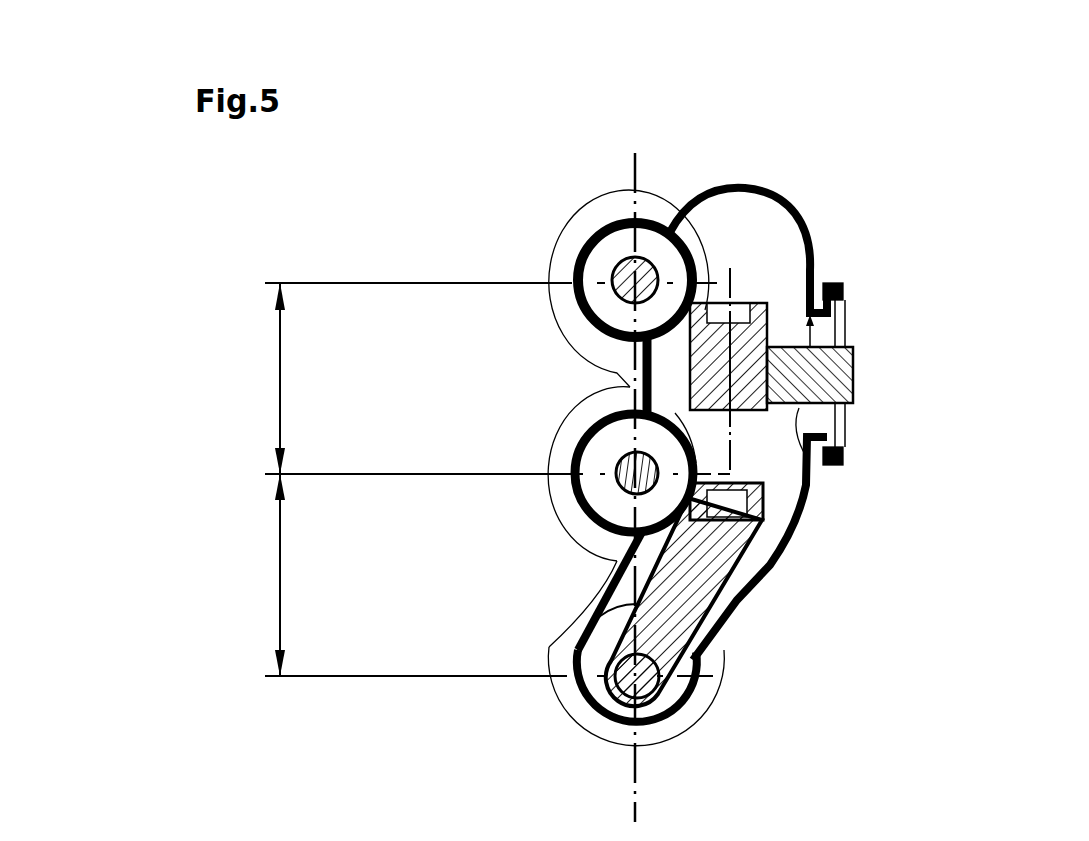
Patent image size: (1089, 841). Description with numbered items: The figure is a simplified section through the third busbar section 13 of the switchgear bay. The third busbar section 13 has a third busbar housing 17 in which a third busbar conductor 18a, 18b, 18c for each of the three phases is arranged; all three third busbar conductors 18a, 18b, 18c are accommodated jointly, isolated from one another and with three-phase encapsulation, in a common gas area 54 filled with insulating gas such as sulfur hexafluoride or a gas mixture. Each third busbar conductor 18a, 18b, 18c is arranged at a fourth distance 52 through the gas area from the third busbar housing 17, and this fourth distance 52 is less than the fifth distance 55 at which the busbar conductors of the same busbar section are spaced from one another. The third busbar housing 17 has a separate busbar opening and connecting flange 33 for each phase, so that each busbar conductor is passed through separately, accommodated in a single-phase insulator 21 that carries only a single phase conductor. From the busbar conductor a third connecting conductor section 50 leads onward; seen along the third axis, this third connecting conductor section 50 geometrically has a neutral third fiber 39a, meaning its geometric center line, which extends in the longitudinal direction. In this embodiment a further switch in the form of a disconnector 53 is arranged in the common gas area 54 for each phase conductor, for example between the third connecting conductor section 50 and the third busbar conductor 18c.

The third busbar section 13 is at (762, 120).
The third busbar housing 17 is at (767, 288).
The third busbar conductor 18a is at (613, 265).
The third busbar conductor 18b is at (620, 490).
The third busbar conductor 18c is at (612, 697).
The single-phase insulator 21 is at (850, 423).
The connecting flange 33 is at (848, 262).
The third fiber 39a is at (853, 378).
The third connecting conductor section 50 is at (807, 463).
The fourth distance 52 is at (607, 237).
The disconnector 53 is at (846, 267).
The common gas area 54 is at (740, 222).
The fifth distance 55 is at (280, 392).